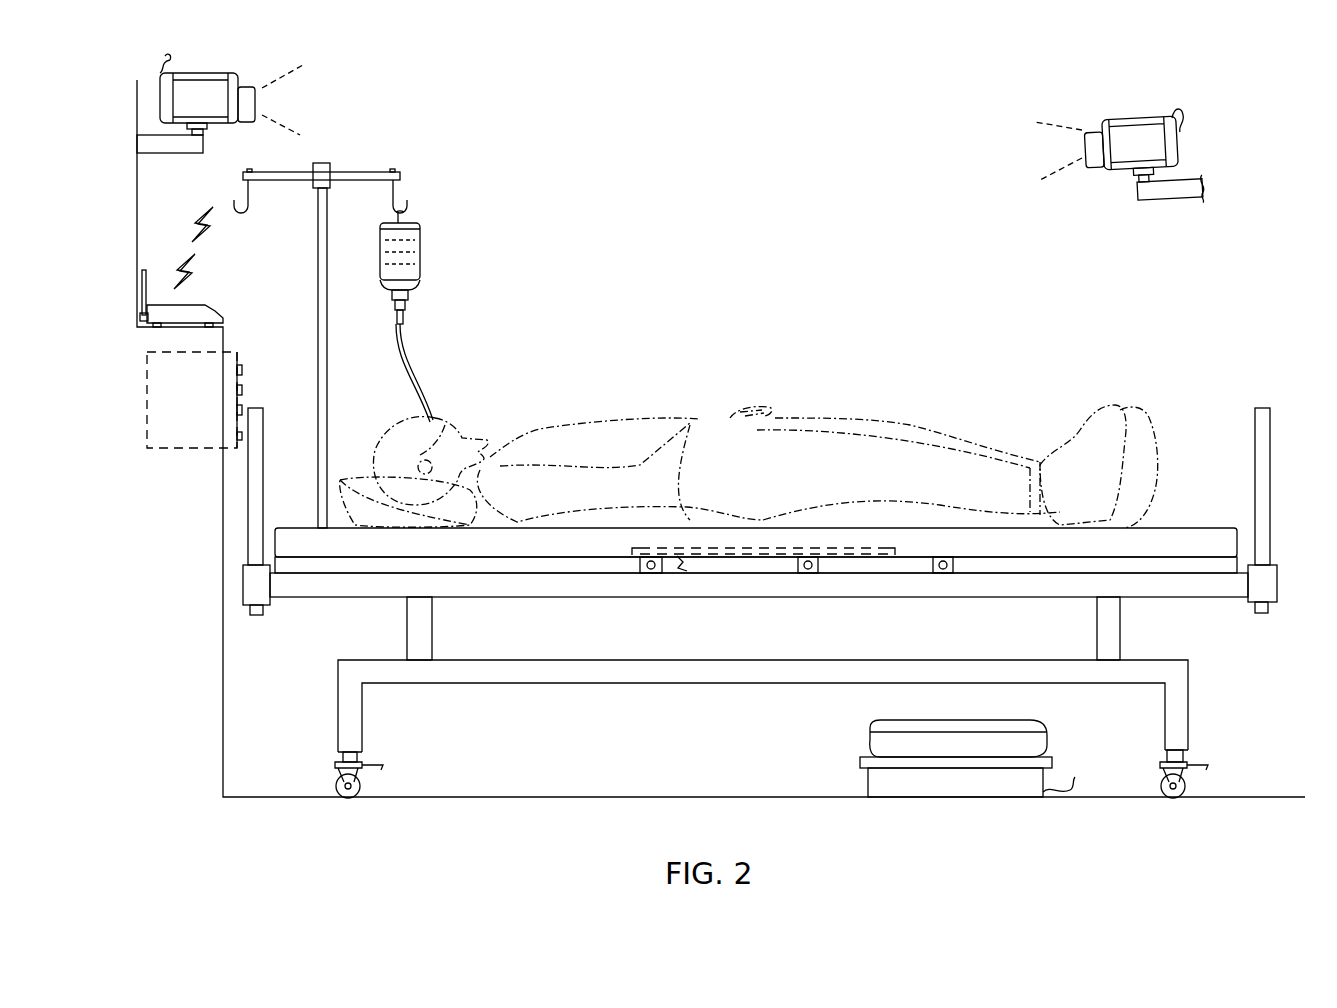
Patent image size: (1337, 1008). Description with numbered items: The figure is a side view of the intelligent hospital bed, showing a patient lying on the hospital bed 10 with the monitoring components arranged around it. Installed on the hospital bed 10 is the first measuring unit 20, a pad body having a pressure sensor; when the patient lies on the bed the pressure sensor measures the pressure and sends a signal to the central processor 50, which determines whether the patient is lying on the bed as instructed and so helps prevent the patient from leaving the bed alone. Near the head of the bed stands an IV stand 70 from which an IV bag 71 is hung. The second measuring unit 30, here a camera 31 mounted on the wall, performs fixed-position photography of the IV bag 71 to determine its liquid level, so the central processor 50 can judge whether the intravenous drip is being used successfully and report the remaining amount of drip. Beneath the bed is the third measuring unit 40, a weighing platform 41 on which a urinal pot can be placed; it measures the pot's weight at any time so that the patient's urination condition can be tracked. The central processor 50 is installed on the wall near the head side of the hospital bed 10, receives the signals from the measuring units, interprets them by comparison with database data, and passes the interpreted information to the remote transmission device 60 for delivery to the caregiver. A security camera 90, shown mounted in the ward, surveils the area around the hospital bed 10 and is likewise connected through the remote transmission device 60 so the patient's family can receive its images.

The hospital bed 10 is at (1212, 597).
The first measuring unit 20 is at (632, 554).
The second measuring unit 30 is at (185, 99).
The camera 31 is at (246, 104).
The third measuring unit 40 is at (881, 758).
The weighing platform 41 is at (854, 762).
The central processor 50 is at (229, 427).
The remote transmission device 60 is at (203, 301).
The IV stand 70 is at (369, 166).
The IV bag 71 is at (420, 248).
The security camera 90 is at (1134, 115).